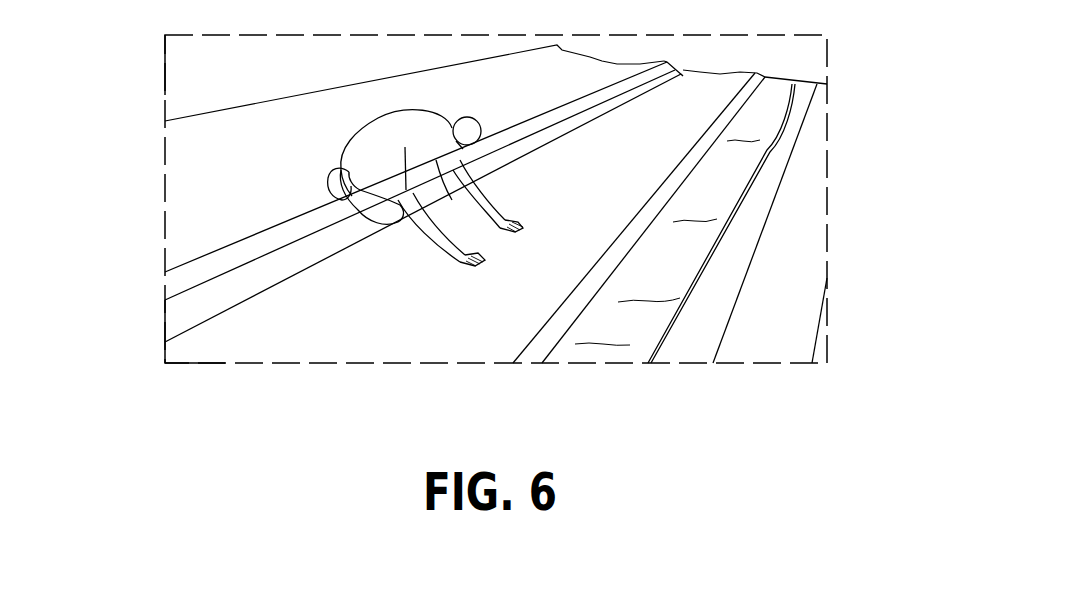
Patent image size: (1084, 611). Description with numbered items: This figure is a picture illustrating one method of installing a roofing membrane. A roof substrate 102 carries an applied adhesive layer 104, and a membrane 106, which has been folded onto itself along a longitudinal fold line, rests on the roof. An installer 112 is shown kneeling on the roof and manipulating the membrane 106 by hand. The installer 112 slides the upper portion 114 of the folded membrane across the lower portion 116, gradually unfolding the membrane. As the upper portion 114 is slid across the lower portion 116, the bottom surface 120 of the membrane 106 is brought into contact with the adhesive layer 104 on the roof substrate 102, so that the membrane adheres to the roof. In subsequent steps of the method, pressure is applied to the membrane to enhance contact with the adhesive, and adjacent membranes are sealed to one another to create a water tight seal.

The roof substrate 102 is at (805, 273).
The adhesive layer 104 is at (640, 327).
The membrane 106 is at (705, 113).
The installer 112 is at (387, 142).
The upper portion 114 is at (365, 343).
The lower portion 116 is at (184, 252).
The bottom surface 120 is at (612, 212).